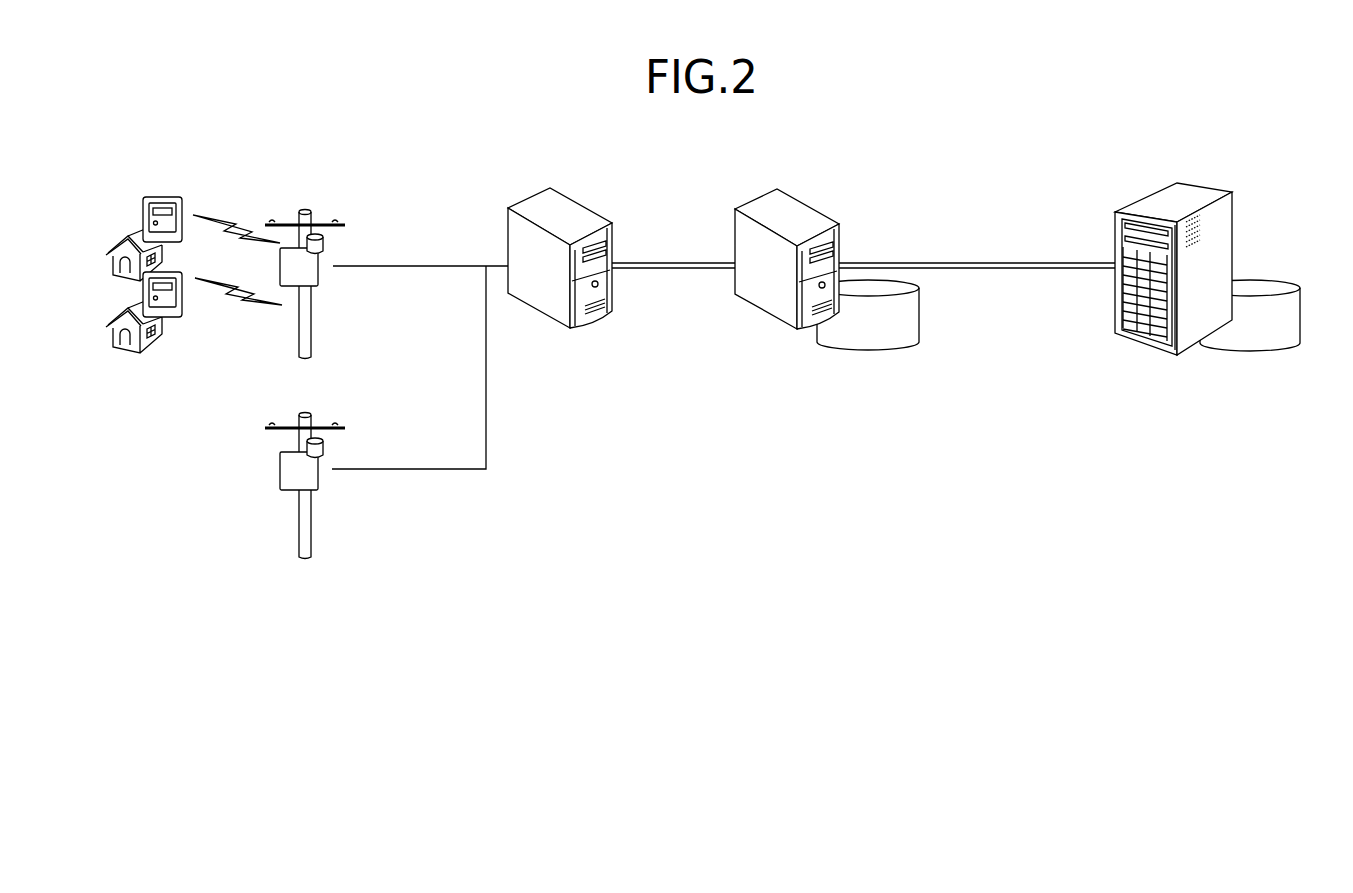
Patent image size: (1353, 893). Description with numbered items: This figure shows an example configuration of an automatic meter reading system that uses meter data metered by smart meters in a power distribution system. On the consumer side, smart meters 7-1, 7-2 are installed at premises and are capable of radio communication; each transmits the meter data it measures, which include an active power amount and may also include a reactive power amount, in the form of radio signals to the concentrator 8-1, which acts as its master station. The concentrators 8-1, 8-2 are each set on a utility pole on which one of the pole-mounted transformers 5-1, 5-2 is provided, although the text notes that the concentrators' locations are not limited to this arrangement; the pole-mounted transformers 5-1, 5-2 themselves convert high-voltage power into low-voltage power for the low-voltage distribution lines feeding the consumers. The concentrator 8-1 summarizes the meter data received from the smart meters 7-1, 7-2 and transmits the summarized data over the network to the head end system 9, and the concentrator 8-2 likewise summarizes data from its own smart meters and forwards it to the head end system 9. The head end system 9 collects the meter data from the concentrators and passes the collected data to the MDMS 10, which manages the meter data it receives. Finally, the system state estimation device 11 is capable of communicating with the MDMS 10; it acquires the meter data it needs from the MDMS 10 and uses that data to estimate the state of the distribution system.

The smart meter 7-1 is at (161, 196).
The smart meter 7-2 is at (183, 296).
The pole-mounted transformer 5-1 is at (324, 242).
The pole-mounted transformer 5-2 is at (324, 446).
The concentrator 8-1 is at (308, 272).
The concentrator 8-2 is at (308, 476).
The head end system 9 is at (566, 215).
The MDMS 10 is at (793, 217).
The system state estimation device 11 is at (1188, 195).